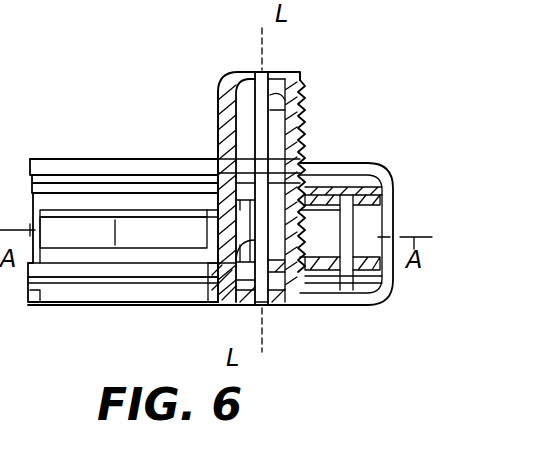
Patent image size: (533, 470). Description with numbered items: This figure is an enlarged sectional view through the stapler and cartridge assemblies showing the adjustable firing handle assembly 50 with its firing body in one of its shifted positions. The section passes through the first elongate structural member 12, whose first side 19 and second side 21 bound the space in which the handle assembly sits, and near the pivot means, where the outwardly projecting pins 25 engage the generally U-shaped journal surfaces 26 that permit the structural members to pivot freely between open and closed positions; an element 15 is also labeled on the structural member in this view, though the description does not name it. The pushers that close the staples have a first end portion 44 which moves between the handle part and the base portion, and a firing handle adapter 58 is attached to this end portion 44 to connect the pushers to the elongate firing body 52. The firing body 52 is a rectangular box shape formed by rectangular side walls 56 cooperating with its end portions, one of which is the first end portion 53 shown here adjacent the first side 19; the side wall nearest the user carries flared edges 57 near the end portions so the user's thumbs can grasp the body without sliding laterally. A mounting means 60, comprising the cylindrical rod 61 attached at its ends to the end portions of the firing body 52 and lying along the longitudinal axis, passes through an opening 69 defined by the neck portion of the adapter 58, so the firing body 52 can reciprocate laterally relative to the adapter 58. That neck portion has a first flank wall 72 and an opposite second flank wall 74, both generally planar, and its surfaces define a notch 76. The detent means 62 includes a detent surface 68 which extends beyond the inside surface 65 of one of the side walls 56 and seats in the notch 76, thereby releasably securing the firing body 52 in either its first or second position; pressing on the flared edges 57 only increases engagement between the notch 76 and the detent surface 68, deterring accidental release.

The first elongate structural member 12 is at (44, 286).
The housing wall 15 is at (120, 297).
The first side 19 is at (72, 272).
The second side 21 is at (58, 185).
The pins 25 is at (363, 228).
The journal surfaces 26 is at (360, 192).
The first end portion of the pushers 44 is at (115, 233).
The adjustable firing handle assembly 50 is at (212, 78).
The elongate firing body 52 is at (216, 103).
The first end portion of the firing body 53 is at (242, 312).
The rectangular side walls 56 is at (217, 135).
The flared edges 57 is at (305, 80).
The firing handle adapter 58 is at (205, 233).
The mounting means 60 is at (255, 70).
The rod 61 is at (285, 92).
The detent means 62 is at (367, 303).
The inside surface 65 is at (205, 298).
The detent surface 68 is at (332, 165).
The opening 69 is at (275, 310).
The first flank wall 72 is at (308, 108).
The second flank wall 74 is at (290, 310).
The notch 76 is at (322, 250).